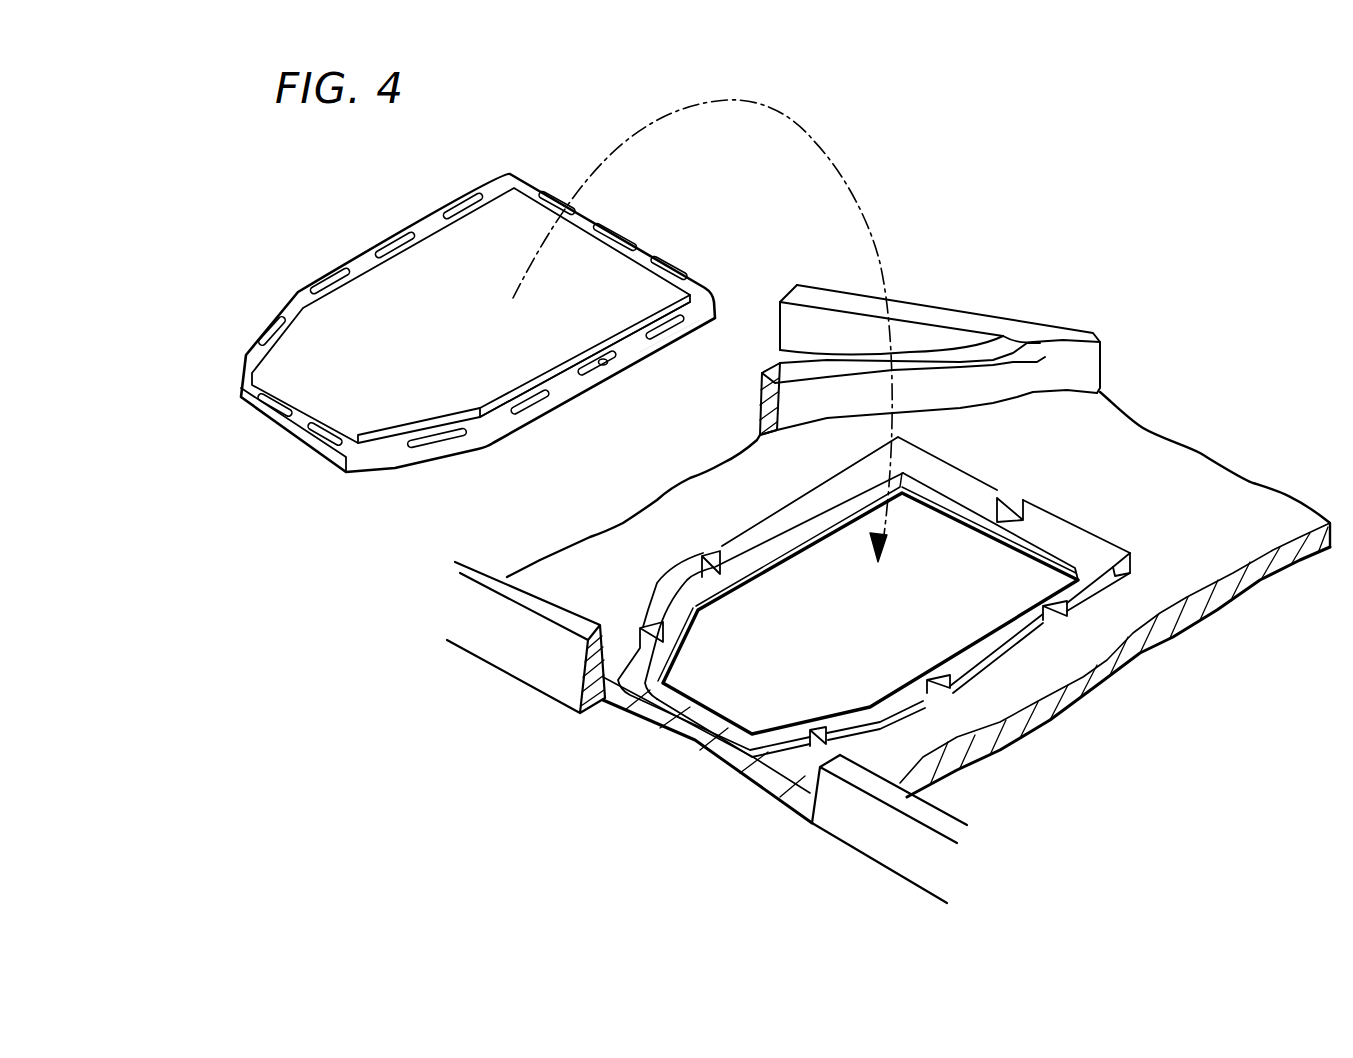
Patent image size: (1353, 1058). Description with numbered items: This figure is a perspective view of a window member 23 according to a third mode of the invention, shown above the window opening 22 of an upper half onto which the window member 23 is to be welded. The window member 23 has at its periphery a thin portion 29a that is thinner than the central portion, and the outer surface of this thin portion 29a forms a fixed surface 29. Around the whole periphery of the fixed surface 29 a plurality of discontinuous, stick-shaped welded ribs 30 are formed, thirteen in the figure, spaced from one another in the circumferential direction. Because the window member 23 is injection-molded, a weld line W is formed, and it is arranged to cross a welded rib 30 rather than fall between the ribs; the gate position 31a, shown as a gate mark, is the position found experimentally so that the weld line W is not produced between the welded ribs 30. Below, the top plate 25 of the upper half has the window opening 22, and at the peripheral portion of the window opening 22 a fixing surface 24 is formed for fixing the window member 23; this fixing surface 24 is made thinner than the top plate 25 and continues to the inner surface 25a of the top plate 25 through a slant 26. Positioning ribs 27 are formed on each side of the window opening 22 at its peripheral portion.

The window opening 22 is at (773, 577).
The window member 23 is at (399, 217).
The fixing surface 24 is at (943, 498).
The top plate 25 is at (1018, 300).
The inner surface of the top plate 25a is at (1135, 455).
The slant 26 is at (985, 495).
The positioning ribs 27 is at (709, 552).
The fixed surface 29 is at (567, 380).
The thin portion 29a is at (654, 349).
The welded ribs 30 is at (338, 268).
The gate position 31a is at (608, 367).
The weld line W is at (532, 420).